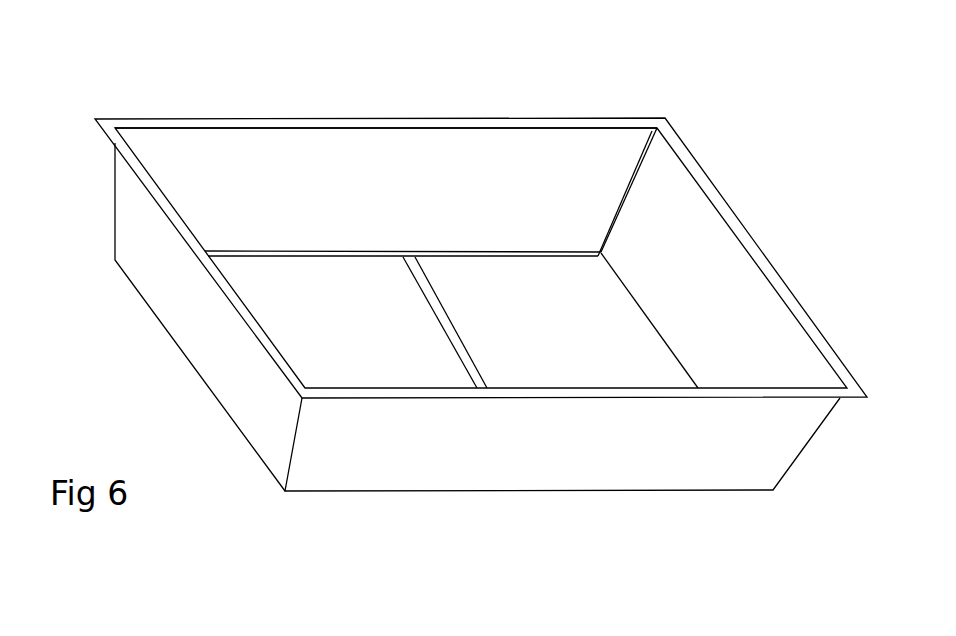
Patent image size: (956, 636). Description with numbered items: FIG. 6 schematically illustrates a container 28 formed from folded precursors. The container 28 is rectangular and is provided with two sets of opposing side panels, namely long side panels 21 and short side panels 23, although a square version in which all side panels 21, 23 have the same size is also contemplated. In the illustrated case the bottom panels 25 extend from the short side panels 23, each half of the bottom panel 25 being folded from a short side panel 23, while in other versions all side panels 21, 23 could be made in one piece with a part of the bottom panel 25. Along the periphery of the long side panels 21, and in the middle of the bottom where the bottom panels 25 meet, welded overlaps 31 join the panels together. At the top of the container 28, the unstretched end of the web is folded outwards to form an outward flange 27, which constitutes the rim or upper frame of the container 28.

The long side panel 21 is at (390, 173).
The short side panel 23 is at (205, 330).
The bottom panel 25 is at (343, 347).
The outward flange 27 is at (210, 120).
The container 28 is at (362, 548).
The welded overlap 31 is at (665, 118).